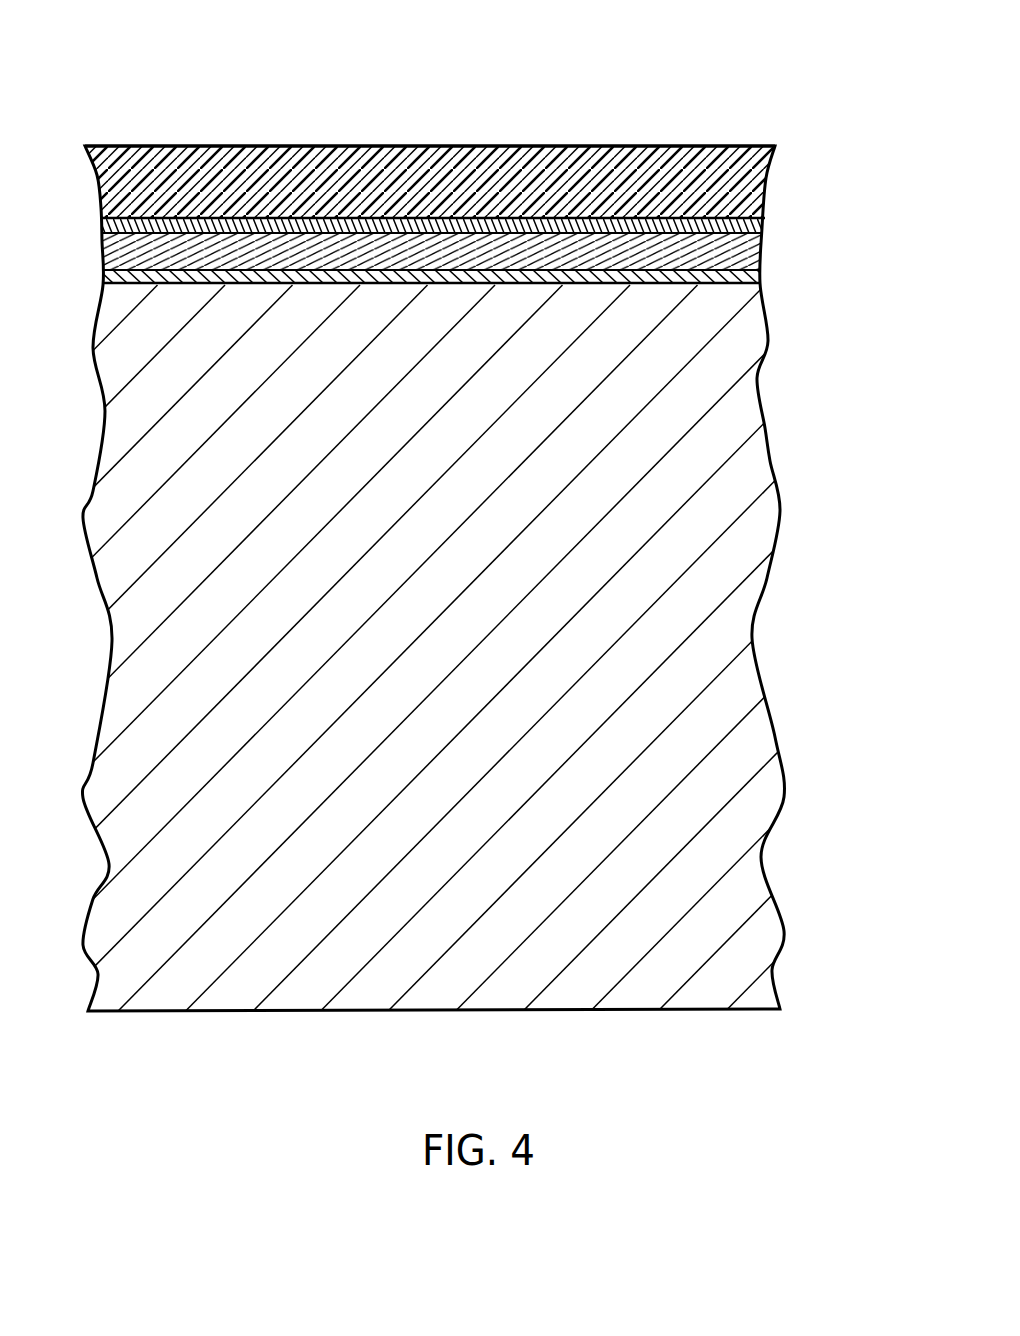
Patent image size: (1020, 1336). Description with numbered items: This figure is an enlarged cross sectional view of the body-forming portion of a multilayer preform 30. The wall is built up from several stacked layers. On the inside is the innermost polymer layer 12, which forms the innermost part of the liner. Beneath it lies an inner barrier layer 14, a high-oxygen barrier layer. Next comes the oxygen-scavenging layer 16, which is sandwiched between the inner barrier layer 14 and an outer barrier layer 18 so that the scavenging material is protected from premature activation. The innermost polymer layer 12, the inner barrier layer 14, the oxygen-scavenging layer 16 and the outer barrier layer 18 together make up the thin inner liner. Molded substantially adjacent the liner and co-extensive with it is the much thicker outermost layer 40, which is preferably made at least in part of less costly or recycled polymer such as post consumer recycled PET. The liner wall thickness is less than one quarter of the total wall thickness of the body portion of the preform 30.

The innermost polymer layer 12 is at (770, 160).
The inner barrier layer 14 is at (765, 224).
The oxygen-scavenging layer 16 is at (765, 254).
The outer barrier layer 18 is at (760, 276).
The multilayer preform 30 is at (740, 137).
The outermost layer 40 is at (770, 463).